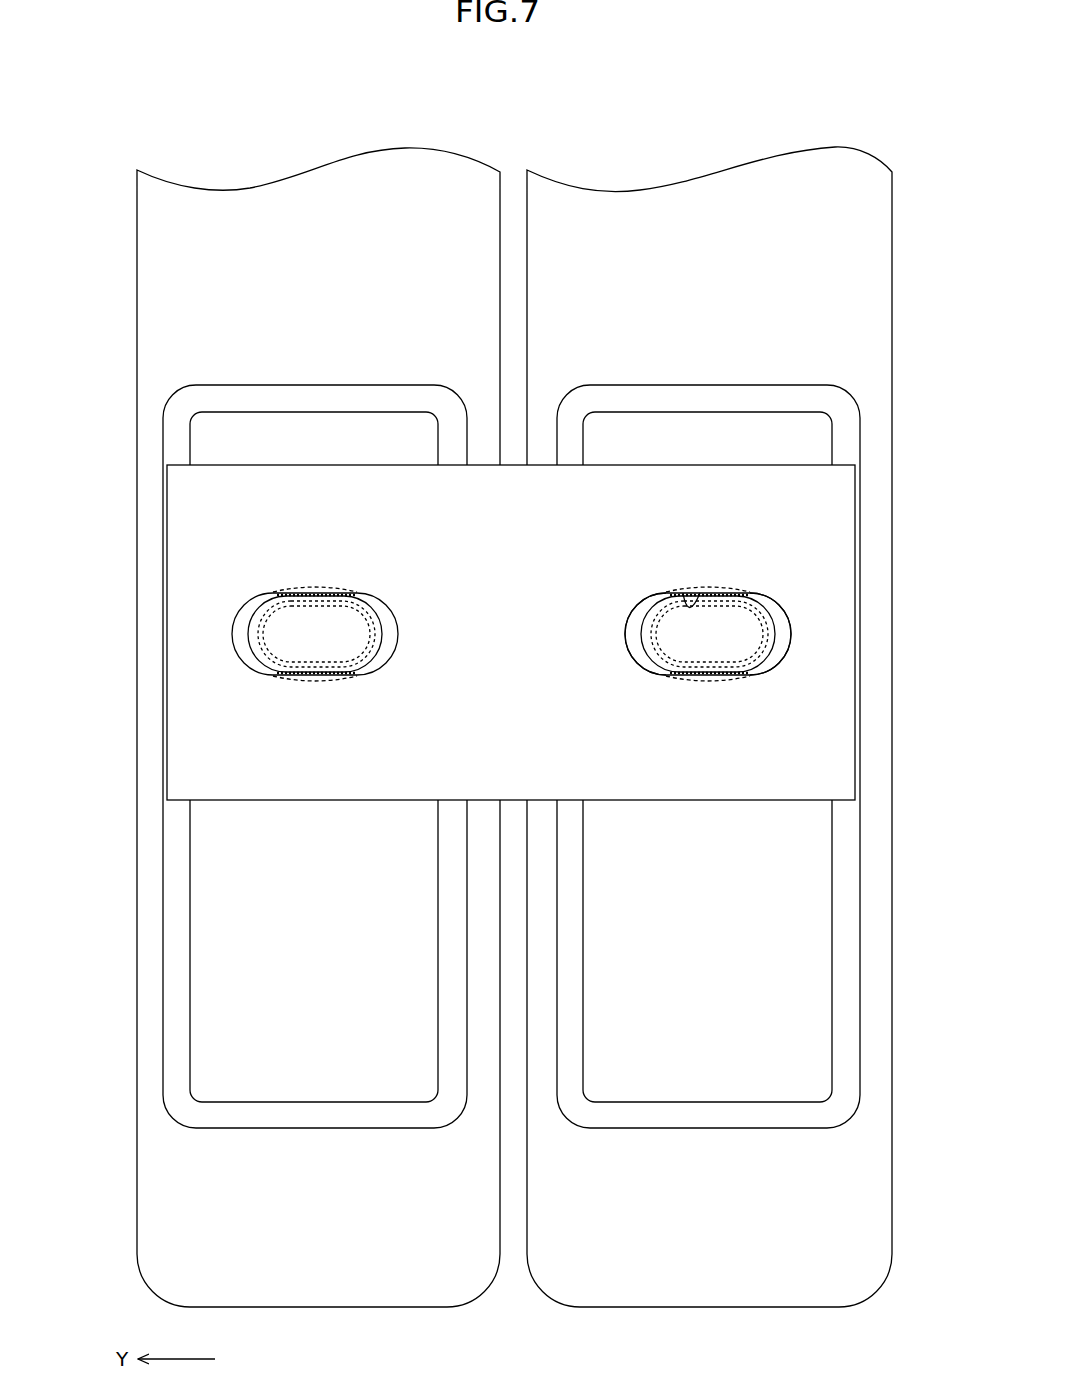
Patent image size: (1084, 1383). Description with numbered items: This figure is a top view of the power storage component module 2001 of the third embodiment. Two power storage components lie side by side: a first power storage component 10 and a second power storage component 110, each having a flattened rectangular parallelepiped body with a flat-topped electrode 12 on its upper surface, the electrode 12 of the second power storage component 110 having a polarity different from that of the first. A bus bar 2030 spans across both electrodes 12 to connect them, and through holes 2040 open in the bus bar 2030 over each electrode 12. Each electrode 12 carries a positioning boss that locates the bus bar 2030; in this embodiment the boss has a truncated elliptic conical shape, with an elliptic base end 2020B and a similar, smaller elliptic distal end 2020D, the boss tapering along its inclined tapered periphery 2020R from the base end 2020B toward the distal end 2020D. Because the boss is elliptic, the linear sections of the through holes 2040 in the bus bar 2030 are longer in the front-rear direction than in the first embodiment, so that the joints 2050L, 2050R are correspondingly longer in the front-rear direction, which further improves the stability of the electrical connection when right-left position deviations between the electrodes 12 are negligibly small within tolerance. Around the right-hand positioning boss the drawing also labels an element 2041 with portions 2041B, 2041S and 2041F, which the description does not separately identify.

The power storage component module 2001 is at (502, 703).
The first power storage component 10 is at (393, 1273).
The second power storage component 110 is at (665, 1273).
The electrode 12 is at (215, 960).
The bus bar 2030 is at (187, 568).
The through hole 2040 is at (392, 606).
The base end 2020B is at (247, 618).
The tapered periphery 2020R is at (260, 638).
The distal end 2020D is at (255, 650).
The joint 2050R is at (273, 595).
The joint 2050L is at (275, 673).
The engaging member 2041 is at (857, 102).
The engaging member base 2041B is at (640, 597).
The engaging member side 2041S is at (717, 673).
The engaging member flange 2041F is at (780, 593).